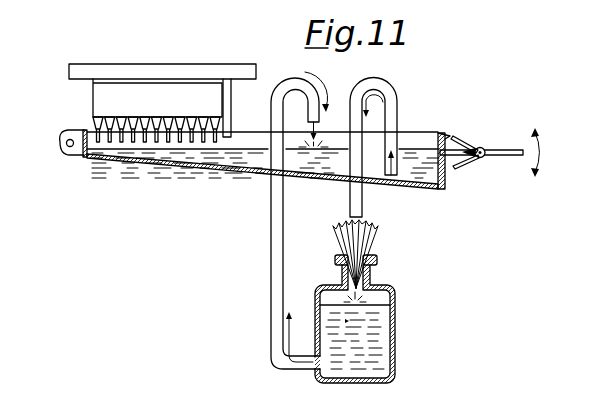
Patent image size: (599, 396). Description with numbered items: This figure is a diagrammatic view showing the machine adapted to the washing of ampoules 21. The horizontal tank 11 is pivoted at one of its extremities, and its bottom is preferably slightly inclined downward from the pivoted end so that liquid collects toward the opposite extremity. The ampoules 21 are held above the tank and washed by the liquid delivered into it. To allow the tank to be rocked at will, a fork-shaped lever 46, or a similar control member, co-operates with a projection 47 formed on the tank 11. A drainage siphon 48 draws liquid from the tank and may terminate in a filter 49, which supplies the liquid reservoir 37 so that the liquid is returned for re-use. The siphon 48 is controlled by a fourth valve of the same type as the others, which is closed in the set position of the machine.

The horizontal tank 11 is at (414, 188).
The ampoules 21 is at (122, 123).
The liquid reservoir 37 is at (395, 317).
The fork-shaped lever 46 is at (505, 150).
The projection 47 is at (457, 139).
The drainage siphon 48 is at (392, 102).
The filter 49 is at (368, 232).